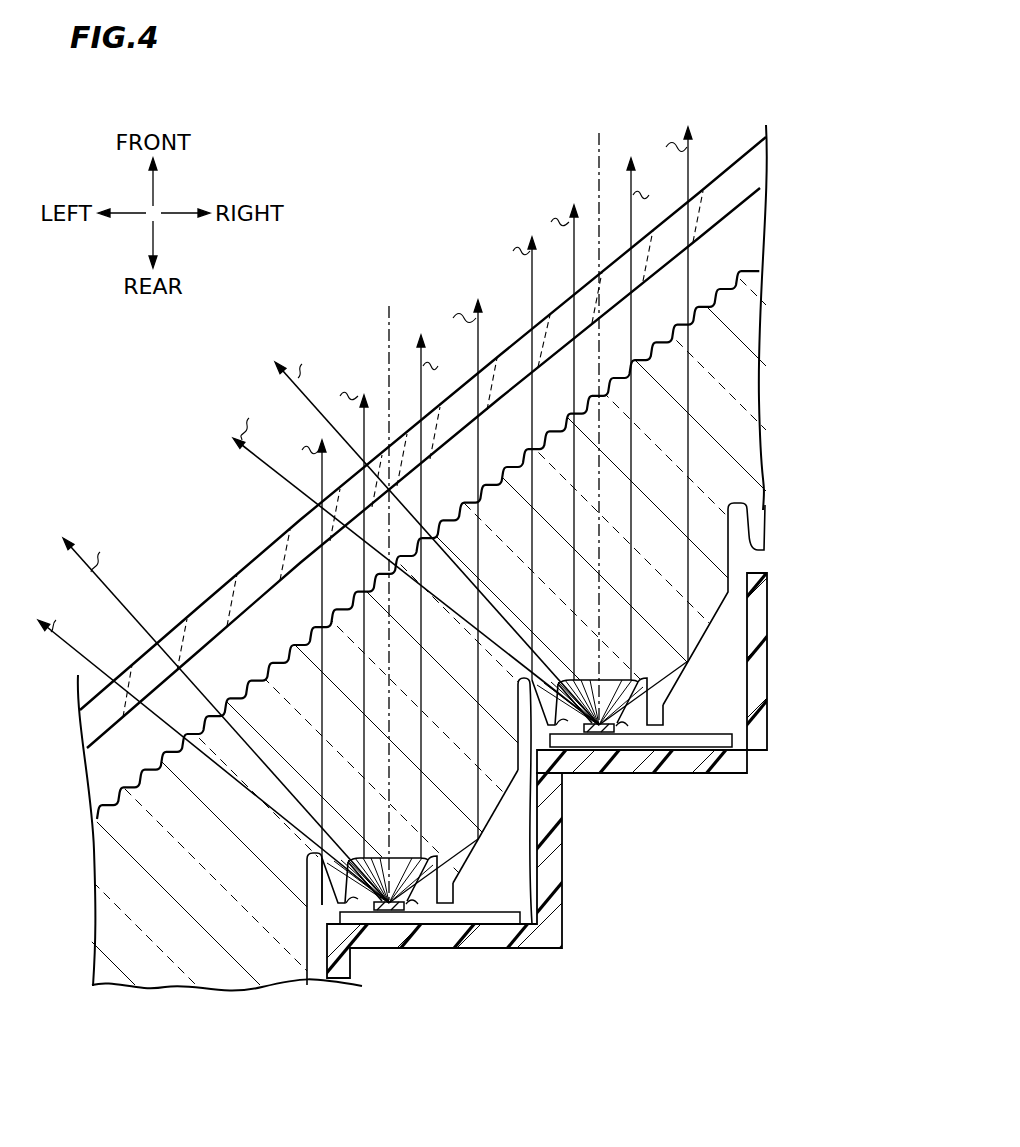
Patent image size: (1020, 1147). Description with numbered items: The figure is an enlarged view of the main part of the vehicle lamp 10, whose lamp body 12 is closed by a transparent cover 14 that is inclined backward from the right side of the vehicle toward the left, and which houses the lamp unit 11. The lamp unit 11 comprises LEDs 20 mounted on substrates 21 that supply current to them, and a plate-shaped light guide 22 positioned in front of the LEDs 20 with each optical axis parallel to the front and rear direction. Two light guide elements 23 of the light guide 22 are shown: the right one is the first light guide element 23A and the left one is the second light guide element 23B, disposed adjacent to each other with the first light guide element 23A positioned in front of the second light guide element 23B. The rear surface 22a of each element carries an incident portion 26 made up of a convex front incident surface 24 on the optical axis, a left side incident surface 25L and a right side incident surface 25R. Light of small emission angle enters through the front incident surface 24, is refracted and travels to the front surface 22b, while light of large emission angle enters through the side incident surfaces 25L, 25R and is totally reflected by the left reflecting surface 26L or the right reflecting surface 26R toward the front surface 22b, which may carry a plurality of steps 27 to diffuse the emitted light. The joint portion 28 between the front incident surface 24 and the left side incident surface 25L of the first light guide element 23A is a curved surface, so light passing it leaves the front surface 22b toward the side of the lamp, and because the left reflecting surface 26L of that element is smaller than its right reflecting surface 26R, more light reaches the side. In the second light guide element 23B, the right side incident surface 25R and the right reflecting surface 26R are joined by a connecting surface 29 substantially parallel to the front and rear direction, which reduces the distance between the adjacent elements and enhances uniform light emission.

The vehicle lamp 10 is at (176, 501).
The lamp unit 11 is at (733, 265).
The lamp body 12 is at (540, 950).
The transparent cover 14 is at (715, 197).
The LED 20 is at (408, 912).
The substrate 21 is at (485, 926).
The light guide 22 is at (751, 392).
The rear surface 22a is at (308, 966).
The front surface 22b is at (258, 653).
The light guide element 23 is at (550, 776).
The first light guide element 23A is at (690, 684).
The second light guide element 23B is at (480, 860).
The front incident surface 24 is at (400, 905).
The left side incident surface 25L is at (346, 905).
The right side incident surface 25R is at (446, 905).
The incident portion 26 is at (360, 1060).
The left reflecting surface 26L is at (307, 908).
The right reflecting surface 26R is at (609, 693).
The steps 27 is at (227, 705).
The joint portion 28 is at (360, 905).
The connecting surface 29 is at (455, 888).